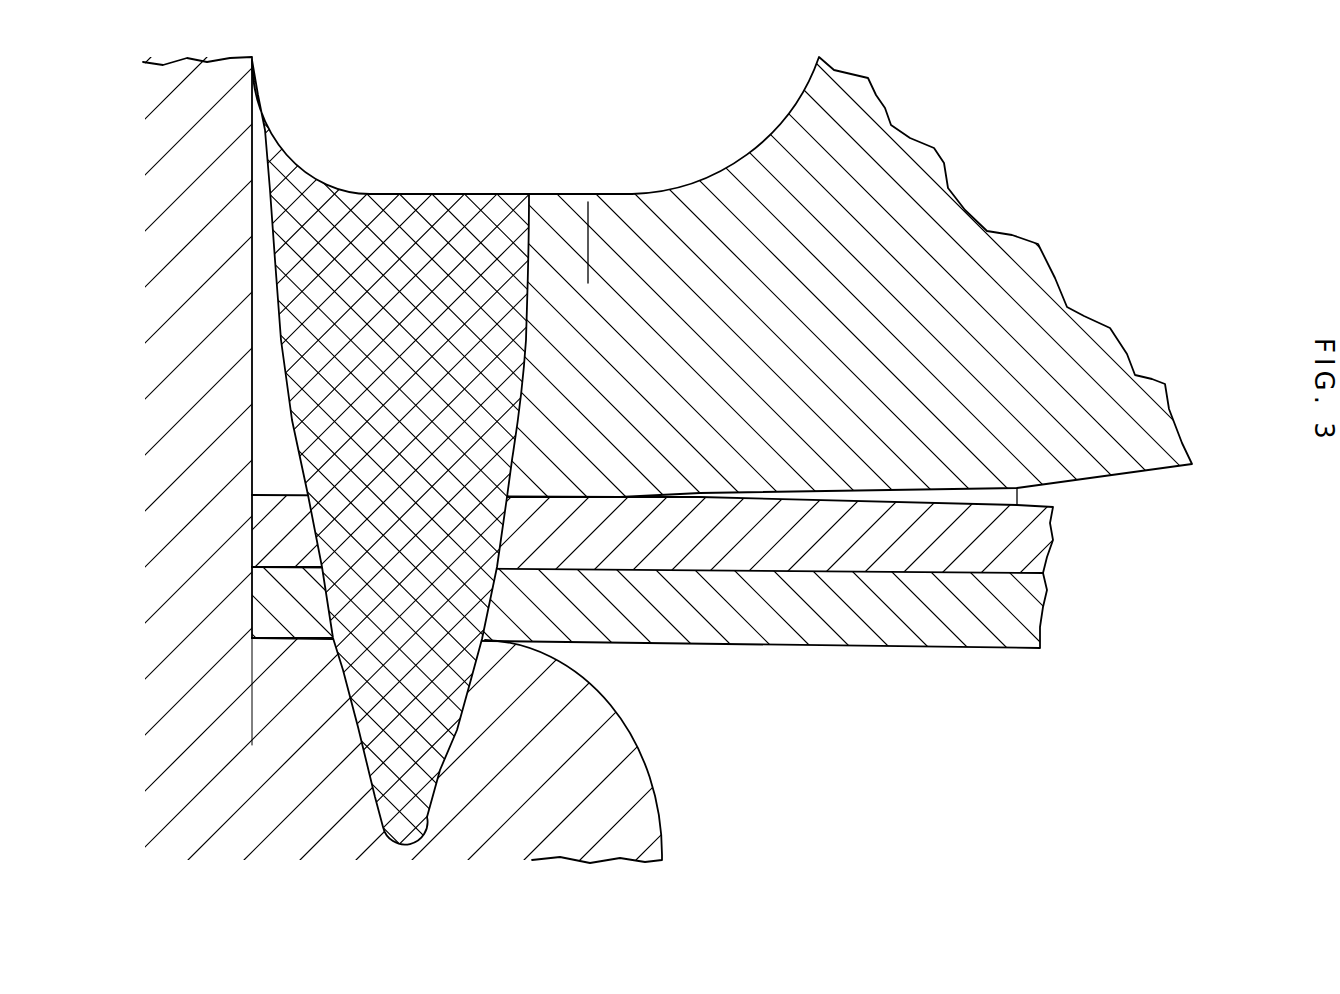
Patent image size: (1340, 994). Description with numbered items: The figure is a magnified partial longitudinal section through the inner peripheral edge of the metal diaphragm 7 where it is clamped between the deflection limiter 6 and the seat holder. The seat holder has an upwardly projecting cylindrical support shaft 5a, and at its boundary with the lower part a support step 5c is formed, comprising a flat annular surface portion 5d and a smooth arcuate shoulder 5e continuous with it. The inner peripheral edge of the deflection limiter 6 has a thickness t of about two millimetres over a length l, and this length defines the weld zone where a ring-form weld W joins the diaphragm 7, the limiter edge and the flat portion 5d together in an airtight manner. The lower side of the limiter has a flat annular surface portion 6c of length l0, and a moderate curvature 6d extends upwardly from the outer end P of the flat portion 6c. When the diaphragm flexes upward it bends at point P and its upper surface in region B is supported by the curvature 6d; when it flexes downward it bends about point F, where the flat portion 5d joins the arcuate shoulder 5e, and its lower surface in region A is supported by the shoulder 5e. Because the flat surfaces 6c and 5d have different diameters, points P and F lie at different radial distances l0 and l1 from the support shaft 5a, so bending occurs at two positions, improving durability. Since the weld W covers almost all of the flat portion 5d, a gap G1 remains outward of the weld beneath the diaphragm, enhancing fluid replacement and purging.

The support shaft 5a is at (187, 173).
The support step 5c is at (298, 665).
The flat annular surface portion 5d is at (305, 633).
The arcuate shoulder 5e is at (628, 728).
The deflection limiter 6 is at (1058, 249).
The flat annular surface portion 6c is at (537, 491).
The curvature 6d is at (1017, 505).
The metal diaphragm 7 is at (851, 661).
The weld W is at (368, 534).
The length l is at (277, 470).
The length l0 is at (614, 414).
The distance l1 is at (471, 729).
The thickness t is at (557, 194).
The point P is at (623, 497).
The region B is at (830, 495).
The point F is at (485, 638).
The region A is at (601, 652).
The gap G1 is at (505, 641).